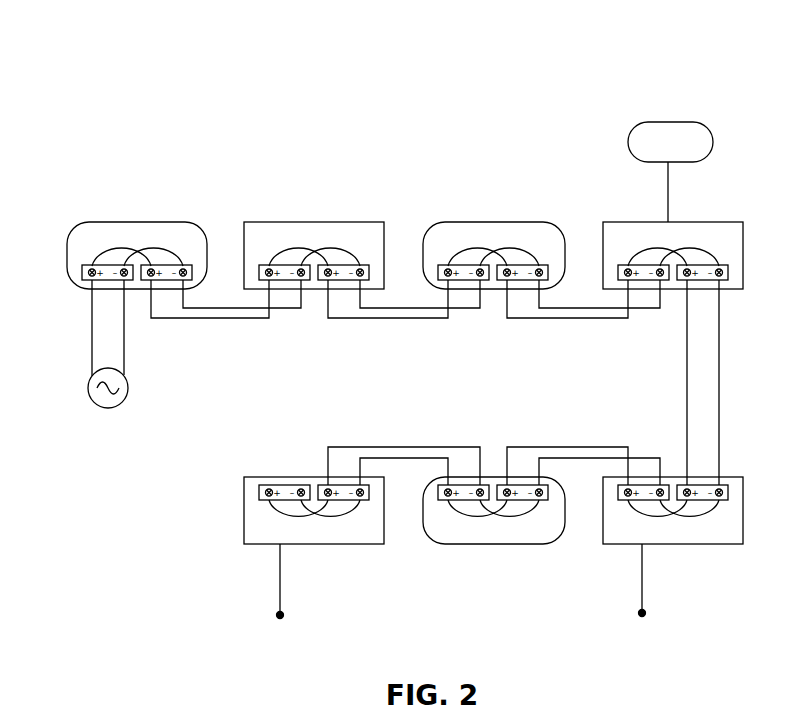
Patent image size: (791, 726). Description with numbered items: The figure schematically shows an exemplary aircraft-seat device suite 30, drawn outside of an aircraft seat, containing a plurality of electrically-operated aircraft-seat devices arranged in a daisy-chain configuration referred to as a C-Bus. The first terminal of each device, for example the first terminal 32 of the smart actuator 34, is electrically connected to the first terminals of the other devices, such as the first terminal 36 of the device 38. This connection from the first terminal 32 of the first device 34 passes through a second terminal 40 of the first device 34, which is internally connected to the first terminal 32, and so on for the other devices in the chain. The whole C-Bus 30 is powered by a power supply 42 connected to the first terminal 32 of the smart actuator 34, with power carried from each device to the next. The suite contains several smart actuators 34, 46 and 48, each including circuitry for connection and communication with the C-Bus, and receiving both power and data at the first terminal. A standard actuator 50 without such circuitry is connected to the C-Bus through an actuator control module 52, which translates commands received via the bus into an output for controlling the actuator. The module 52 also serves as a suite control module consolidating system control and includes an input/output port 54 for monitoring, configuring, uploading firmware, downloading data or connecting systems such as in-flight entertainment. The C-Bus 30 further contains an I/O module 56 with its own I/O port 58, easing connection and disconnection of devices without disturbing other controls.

The aircraft-seat device suite 30 is at (389, 137).
The first terminal 32 is at (79, 265).
The smart actuator 34 is at (120, 222).
The first terminal 36 is at (262, 265).
The device 38 is at (318, 222).
The second terminal 40 is at (184, 265).
The power supply 42 is at (116, 406).
The smart actuator 46 is at (467, 222).
The smart actuator 48 is at (495, 545).
The actuator 50 is at (668, 122).
The actuator control module 52 is at (632, 223).
The port 54 is at (642, 573).
The I/O module 56 is at (318, 544).
The I/O port 58 is at (279, 575).